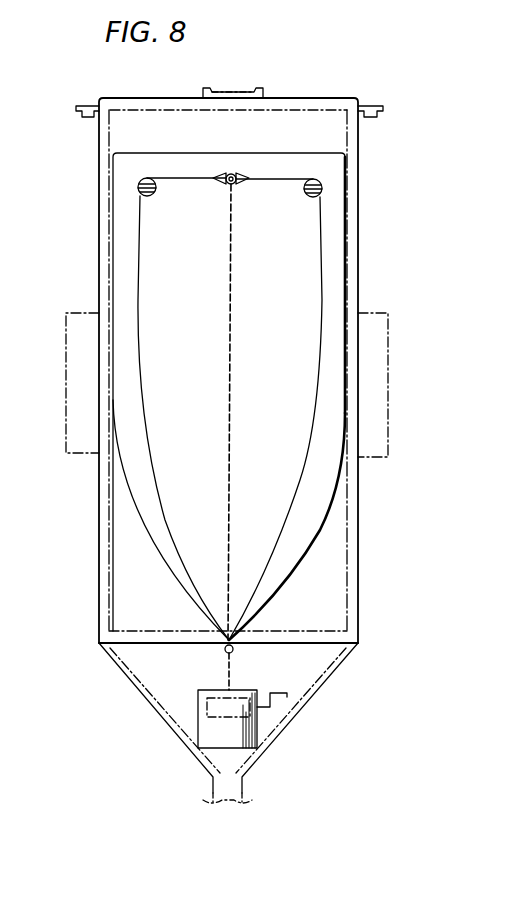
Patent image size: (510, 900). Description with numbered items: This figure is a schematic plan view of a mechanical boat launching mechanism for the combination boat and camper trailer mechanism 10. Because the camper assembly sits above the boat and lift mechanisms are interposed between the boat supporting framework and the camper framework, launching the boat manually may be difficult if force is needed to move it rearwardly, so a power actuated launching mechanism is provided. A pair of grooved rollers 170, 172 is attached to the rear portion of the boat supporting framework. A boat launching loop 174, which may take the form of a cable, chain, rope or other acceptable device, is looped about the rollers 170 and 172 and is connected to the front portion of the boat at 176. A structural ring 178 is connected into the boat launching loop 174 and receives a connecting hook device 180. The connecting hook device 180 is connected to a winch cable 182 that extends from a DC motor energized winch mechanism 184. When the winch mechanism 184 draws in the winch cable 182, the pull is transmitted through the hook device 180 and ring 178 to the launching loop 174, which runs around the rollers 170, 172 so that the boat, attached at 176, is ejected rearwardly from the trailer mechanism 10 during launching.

The combination boat and camper trailer mechanism 10 is at (362, 287).
The grooved roller 170 is at (145, 178).
The grooved roller 172 is at (320, 183).
The boat launching loop 174 is at (283, 535).
The connection to front portion of the boat 176 is at (235, 652).
The structural ring 178 is at (234, 175).
The connecting hook device 180 is at (230, 190).
The winch cable 182 is at (228, 537).
The DC motor energized winch mechanism 184 is at (198, 727).